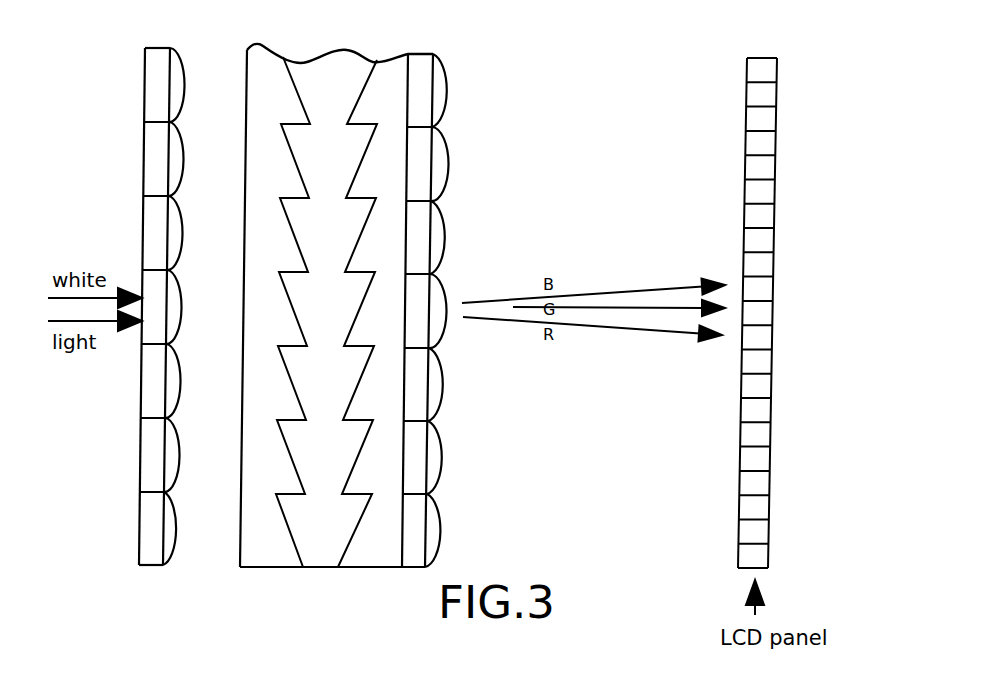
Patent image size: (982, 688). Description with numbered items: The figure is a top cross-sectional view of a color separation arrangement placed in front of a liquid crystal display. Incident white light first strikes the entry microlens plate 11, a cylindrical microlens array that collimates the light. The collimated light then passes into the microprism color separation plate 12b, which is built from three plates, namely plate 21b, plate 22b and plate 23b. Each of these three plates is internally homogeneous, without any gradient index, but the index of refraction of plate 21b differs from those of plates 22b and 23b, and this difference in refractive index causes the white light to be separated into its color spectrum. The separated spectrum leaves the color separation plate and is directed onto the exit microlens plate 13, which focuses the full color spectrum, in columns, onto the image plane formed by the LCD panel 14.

The entry microlens plate 11 is at (155, 60).
The microprism color separation plate 12b is at (391, 285).
The plate 21b is at (263, 47).
The plate 22b is at (385, 166).
The plate 23b is at (330, 237).
The exit microlens plate 13 is at (460, 295).
The LCD panel 14 is at (773, 96).